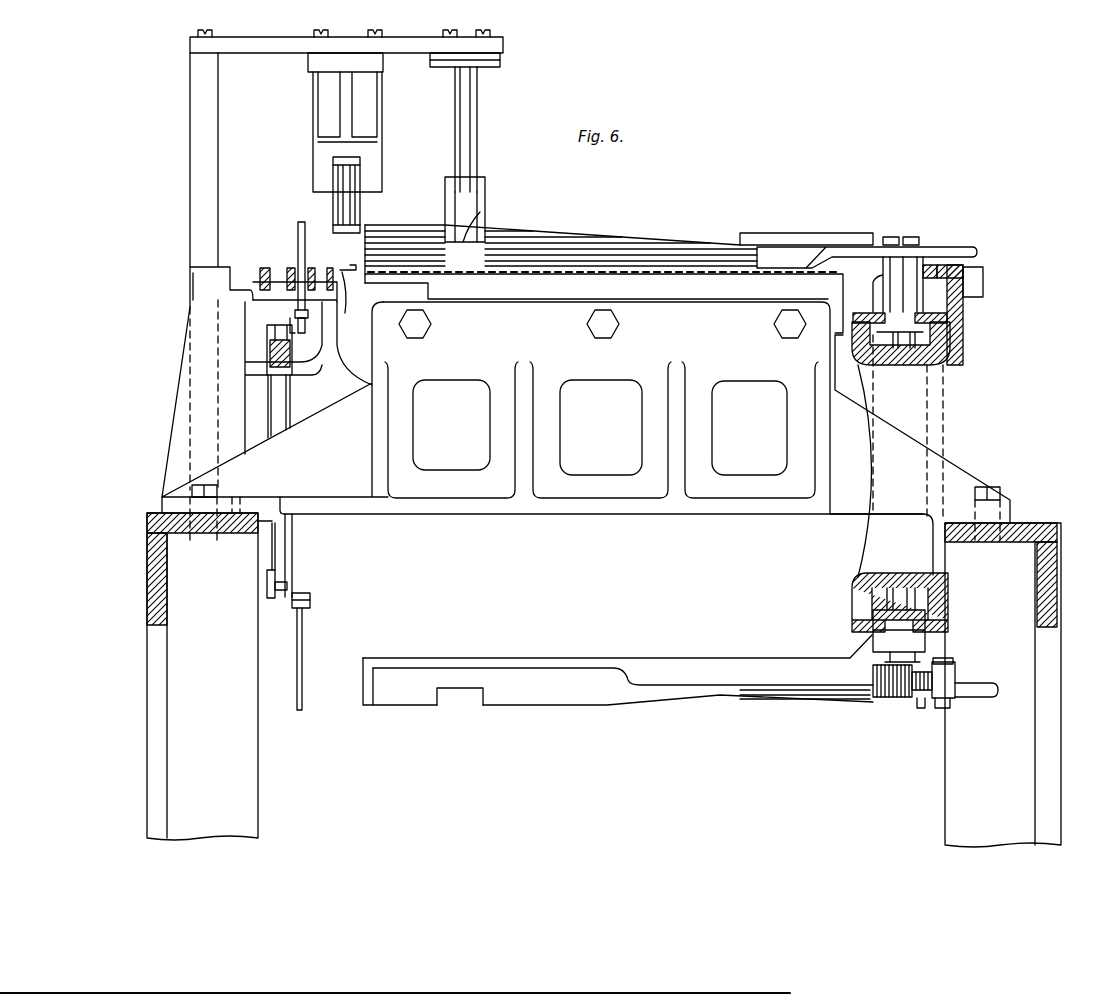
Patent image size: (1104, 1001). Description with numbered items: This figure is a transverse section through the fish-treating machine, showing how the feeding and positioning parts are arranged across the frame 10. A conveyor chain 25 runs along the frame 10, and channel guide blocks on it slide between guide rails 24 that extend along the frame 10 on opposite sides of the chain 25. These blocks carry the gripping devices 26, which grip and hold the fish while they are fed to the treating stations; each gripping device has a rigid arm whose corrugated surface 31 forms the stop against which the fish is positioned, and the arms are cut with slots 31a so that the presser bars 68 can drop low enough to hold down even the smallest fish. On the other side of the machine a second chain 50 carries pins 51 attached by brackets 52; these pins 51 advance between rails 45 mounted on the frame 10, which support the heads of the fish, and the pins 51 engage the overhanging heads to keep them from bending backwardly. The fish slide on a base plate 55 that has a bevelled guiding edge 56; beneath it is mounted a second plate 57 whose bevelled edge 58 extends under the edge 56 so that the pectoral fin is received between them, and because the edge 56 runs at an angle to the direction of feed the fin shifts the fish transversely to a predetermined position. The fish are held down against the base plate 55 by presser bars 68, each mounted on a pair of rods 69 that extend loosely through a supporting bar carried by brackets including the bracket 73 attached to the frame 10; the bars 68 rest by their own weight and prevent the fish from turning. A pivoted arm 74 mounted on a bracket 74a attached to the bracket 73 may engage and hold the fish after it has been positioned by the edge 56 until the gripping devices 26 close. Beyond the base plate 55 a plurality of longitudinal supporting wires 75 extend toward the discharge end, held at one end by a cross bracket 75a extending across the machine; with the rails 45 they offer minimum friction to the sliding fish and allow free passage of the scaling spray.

The frame 10 is at (153, 562).
The guide rails 24 is at (862, 312).
The conveyor chain 25 is at (955, 345).
The gripping devices 26 is at (650, 245).
The surface 31 is at (560, 230).
The slots 31a is at (475, 219).
The rails 45 is at (289, 268).
The chain 50 is at (287, 597).
The pins 51 is at (297, 240).
The brackets 52 is at (295, 578).
The base plate 55 is at (556, 274).
The bevelled guiding edge 56 is at (362, 275).
The second plate 57 is at (350, 313).
The bevelled edge 58 is at (350, 259).
The presser bars 68 is at (472, 199).
The rods 69 is at (461, 147).
The bracket 73 is at (212, 162).
The pivoted arm 74 is at (360, 211).
The bracket 74a is at (376, 124).
The longitudinal supporting wires 75 is at (498, 272).
The cross bracket 75a is at (637, 510).